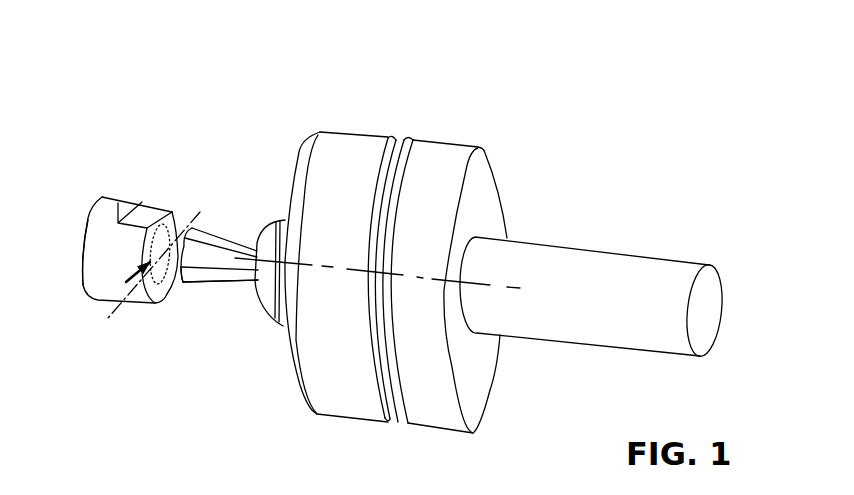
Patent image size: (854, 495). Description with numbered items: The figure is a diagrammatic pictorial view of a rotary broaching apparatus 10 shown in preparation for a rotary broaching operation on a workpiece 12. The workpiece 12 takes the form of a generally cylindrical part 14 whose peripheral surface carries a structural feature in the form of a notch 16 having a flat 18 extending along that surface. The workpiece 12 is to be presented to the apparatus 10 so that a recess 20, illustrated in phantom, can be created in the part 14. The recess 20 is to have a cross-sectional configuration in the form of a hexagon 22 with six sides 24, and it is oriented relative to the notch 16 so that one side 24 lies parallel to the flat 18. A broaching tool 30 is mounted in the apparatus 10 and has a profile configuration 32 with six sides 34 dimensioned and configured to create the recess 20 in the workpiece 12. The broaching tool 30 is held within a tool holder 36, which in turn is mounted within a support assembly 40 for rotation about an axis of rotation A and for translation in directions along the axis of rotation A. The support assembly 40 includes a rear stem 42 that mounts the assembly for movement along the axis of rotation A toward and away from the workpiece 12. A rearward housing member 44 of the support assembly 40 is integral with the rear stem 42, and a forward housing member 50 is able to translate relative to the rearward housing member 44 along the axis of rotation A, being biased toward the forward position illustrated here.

The apparatus 10 is at (354, 245).
The workpiece 12 is at (106, 189).
The generally cylindrical part 14 is at (95, 273).
The notch 16 is at (128, 216).
The flat 18 is at (158, 206).
The recess 20 is at (122, 305).
The hexagon 22 is at (155, 300).
The sides 24 is at (180, 250).
The broaching tool 30 is at (239, 232).
The profile configuration 32 is at (172, 285).
The sides 34 is at (224, 282).
The tool holder 36 is at (266, 303).
The support assembly 40 is at (494, 256).
The rear stem 42 is at (676, 272).
The rearward housing member 44 is at (443, 153).
The forward housing member 50 is at (338, 134).
The axis of rotation A is at (352, 271).